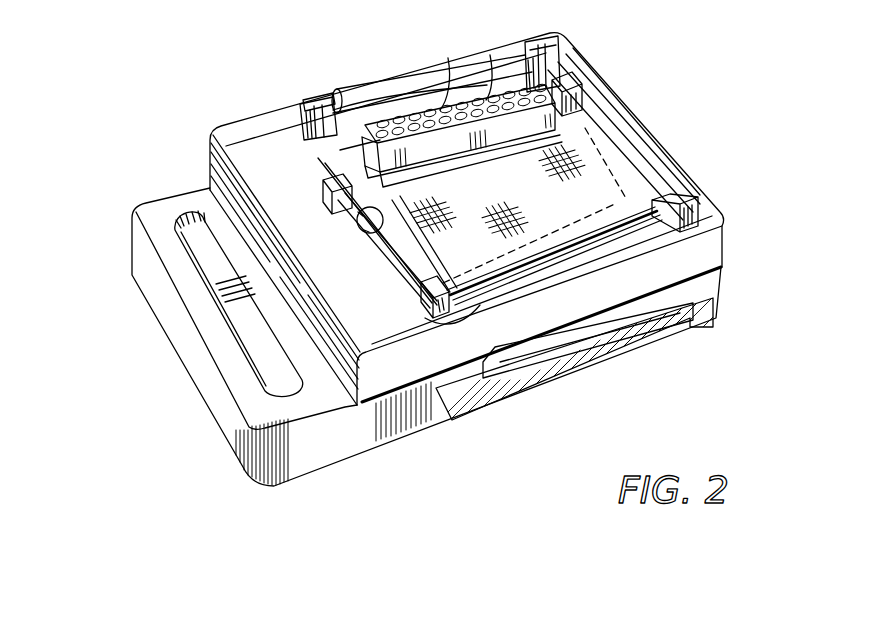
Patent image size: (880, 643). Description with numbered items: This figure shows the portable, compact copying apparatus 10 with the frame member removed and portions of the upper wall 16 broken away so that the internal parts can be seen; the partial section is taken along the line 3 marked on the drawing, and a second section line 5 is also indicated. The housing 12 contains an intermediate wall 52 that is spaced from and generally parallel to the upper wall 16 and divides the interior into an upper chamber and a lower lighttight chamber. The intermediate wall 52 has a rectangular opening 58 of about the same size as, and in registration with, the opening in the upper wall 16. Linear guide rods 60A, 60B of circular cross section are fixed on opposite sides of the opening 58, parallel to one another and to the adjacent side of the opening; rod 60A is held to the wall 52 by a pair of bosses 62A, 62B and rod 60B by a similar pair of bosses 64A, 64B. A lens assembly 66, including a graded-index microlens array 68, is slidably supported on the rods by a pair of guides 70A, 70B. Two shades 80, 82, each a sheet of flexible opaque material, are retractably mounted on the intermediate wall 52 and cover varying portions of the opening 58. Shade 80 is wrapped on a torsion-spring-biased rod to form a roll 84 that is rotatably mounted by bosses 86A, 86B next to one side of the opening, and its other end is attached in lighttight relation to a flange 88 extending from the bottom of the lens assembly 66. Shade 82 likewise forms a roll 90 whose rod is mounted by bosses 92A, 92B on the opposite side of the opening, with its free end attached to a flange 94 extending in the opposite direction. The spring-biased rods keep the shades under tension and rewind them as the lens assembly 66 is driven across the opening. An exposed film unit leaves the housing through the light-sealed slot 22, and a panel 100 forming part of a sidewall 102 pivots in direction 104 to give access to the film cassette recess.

The copying apparatus 10 is at (714, 76).
The housing 12 is at (232, 157).
The upper wall 16 is at (247, 132).
The light-sealed slot 22 is at (470, 390).
The intermediate wall 52 is at (480, 318).
The rectangular opening 58 is at (664, 143).
The linear guide rod 60A is at (377, 240).
The linear guide rod 60B is at (660, 187).
The boss 62A is at (320, 112).
The boss 62B is at (435, 315).
The boss 64A is at (541, 42).
The boss 64B is at (697, 212).
The lens assembly 66 is at (437, 153).
The graded-index microlens array 68 is at (448, 100).
The guide 70A is at (340, 177).
The guide 70B is at (575, 82).
The shade 80 is at (479, 249).
The shade 82 is at (347, 137).
The roll 84 is at (618, 230).
The boss 86A is at (433, 282).
The boss 86B is at (683, 240).
The flange 88 is at (508, 157).
The roll 90 is at (480, 92).
The boss 92A is at (328, 120).
The boss 92B is at (545, 45).
The flange 94 is at (380, 154).
The panel 100 is at (652, 318).
The sidewall 102 is at (338, 442).
The direction 104 is at (725, 273).
The section line 3— 3 is at (163, 300).
The section line 5- 5 is at (397, 72).